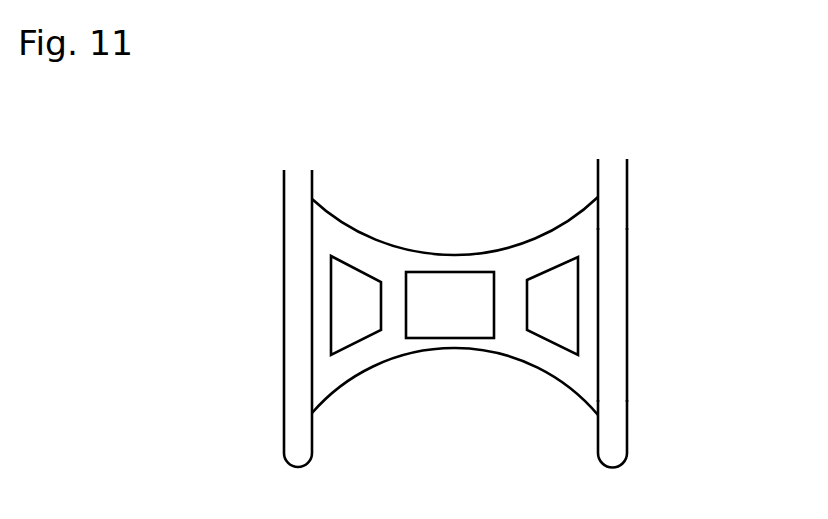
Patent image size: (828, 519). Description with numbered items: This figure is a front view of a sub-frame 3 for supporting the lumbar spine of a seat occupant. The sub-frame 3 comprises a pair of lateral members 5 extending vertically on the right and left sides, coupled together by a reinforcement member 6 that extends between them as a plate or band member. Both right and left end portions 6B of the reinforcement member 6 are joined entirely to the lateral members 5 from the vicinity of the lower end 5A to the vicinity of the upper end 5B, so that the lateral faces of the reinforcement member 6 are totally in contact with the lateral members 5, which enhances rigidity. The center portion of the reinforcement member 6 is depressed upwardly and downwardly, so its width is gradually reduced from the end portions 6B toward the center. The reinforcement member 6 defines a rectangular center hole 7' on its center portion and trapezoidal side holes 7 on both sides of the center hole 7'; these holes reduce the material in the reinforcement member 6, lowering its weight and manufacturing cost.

The sub-frame 3 is at (423, 362).
The lateral member 5 is at (619, 293).
The lower end of lateral member 5A is at (629, 449).
The upper end of lateral member 5B is at (629, 180).
The reinforcement member 6 is at (515, 258).
The end portion of reinforcement member 6B is at (326, 206).
The trapezoidal side hole 7 is at (454, 257).
The rectangular center hole 7' is at (450, 272).